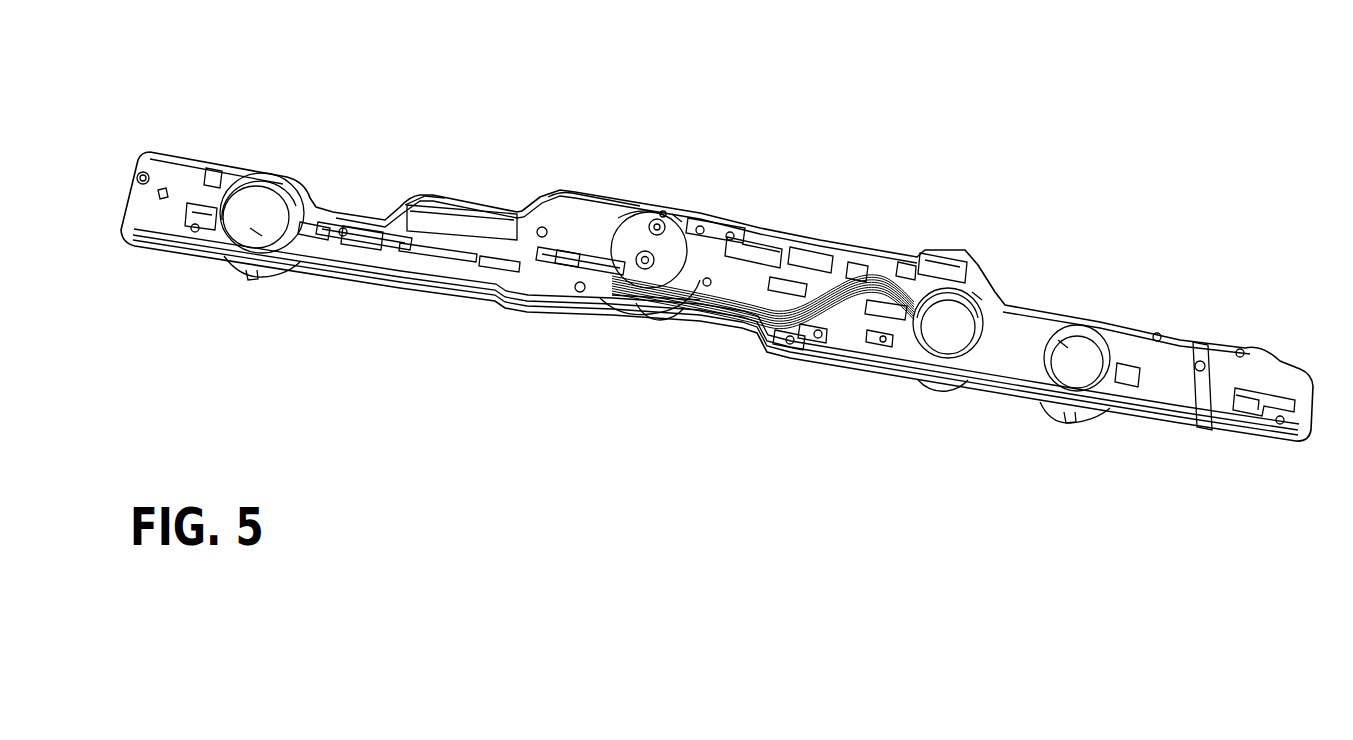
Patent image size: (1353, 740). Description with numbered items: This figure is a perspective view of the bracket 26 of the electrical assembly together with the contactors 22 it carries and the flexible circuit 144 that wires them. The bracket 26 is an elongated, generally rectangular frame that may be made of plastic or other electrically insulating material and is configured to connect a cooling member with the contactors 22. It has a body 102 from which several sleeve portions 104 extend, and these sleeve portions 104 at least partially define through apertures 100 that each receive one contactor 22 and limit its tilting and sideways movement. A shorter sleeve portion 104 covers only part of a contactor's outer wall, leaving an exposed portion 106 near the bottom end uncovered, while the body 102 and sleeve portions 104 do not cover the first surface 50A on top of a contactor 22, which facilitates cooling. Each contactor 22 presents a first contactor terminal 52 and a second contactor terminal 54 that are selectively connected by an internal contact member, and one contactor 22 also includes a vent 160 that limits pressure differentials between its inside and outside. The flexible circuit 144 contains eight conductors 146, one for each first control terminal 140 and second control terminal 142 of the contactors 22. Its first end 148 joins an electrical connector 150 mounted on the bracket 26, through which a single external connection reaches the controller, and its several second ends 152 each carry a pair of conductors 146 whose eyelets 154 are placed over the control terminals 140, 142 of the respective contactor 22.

The bracket 26 is at (451, 184).
The contactor 22 is at (640, 213).
The first surface 50A is at (643, 207).
The first contactor terminal 52 is at (597, 298).
The second contactor terminal 54 is at (658, 213).
The aperture 100 is at (243, 172).
The body 102 is at (428, 198).
The sleeve portion 104 is at (270, 274).
The exposed portion 106 is at (652, 312).
The first control terminal 140 is at (785, 246).
The second control terminal 142 is at (691, 218).
The flexible circuit 144 is at (858, 258).
The conductor 146 is at (845, 268).
The first end 148 is at (950, 288).
The electrical connector 150 is at (915, 255).
The second end 152 is at (248, 236).
The eyelet 154 is at (730, 224).
The vent 160 is at (608, 237).